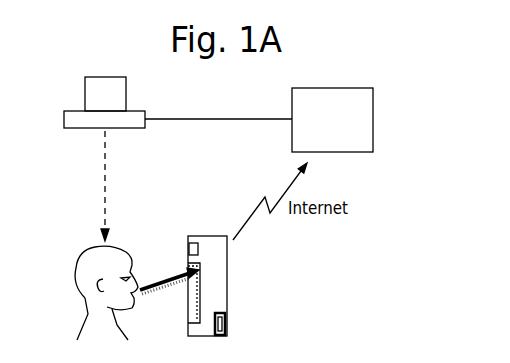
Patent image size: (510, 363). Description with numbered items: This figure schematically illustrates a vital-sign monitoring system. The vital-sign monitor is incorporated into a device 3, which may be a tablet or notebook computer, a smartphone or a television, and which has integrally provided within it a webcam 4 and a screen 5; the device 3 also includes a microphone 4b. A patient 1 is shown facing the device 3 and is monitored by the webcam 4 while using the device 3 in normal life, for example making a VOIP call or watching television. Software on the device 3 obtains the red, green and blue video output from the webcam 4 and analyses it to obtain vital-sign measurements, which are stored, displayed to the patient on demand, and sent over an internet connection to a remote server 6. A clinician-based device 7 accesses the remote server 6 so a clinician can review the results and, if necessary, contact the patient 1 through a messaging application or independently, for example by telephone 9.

The patient 1 is at (92, 263).
The device 3 is at (229, 278).
The webcam 4 is at (189, 251).
The microphone 4b is at (225, 325).
The screen 5 is at (192, 296).
The remote server 6 is at (363, 136).
The clinician-based device 7 is at (98, 90).
The telephone 9 is at (105, 175).